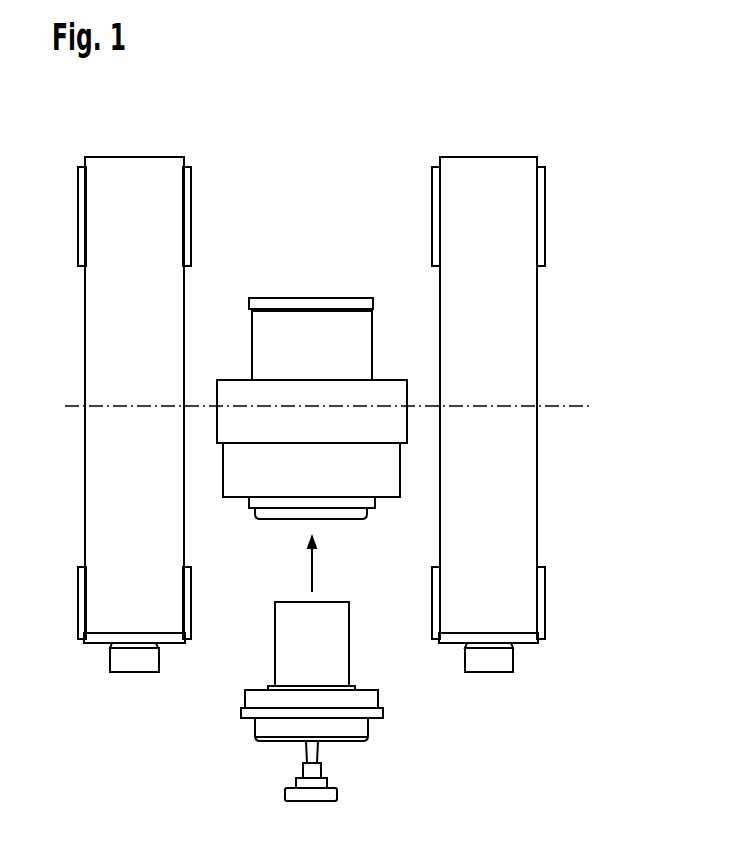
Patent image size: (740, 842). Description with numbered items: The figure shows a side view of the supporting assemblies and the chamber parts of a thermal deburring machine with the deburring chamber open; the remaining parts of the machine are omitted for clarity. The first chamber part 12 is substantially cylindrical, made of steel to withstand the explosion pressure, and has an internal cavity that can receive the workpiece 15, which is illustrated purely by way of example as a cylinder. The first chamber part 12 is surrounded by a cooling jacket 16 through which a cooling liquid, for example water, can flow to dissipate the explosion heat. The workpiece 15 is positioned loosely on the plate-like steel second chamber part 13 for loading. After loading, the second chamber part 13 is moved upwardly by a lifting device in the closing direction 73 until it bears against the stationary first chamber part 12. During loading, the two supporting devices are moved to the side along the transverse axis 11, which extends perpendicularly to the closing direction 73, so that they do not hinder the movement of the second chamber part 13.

The transverse axis 11 is at (583, 405).
The first chamber part 12 is at (318, 300).
The second chamber part 13 is at (375, 713).
The workpiece 15 is at (340, 658).
The cooling jacket 16 is at (392, 385).
The closing direction 73 is at (313, 566).